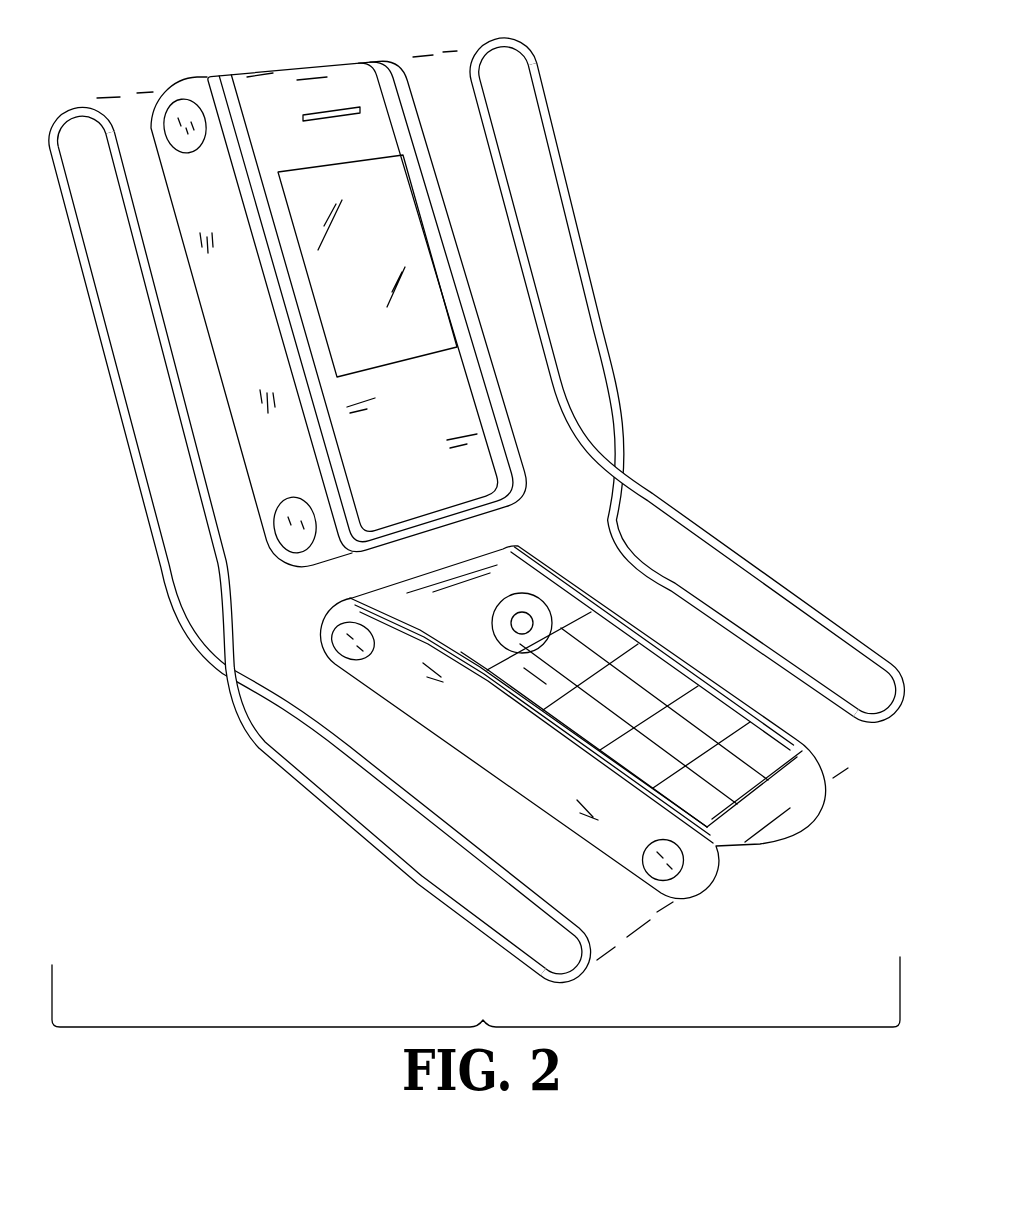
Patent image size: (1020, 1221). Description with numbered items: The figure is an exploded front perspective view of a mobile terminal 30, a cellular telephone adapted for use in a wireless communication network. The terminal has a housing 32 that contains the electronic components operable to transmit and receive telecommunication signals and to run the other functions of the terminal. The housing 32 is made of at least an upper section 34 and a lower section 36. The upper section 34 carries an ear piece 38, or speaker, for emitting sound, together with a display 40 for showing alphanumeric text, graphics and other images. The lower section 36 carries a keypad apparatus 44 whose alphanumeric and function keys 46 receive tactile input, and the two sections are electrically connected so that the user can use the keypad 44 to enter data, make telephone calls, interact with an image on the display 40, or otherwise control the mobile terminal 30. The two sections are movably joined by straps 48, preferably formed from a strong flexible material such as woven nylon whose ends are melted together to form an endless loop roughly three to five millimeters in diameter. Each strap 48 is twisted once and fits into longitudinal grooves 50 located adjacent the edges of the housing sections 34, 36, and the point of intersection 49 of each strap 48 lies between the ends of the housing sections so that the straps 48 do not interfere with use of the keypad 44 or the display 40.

The mobile terminal 30 is at (660, 283).
The housing 32 is at (313, 60).
The upper section 34 is at (270, 85).
The lower section 36 is at (615, 842).
The ear piece 38 is at (340, 118).
The display 40 is at (420, 343).
The keypad apparatus 44 is at (695, 694).
The alphanumeric and function keys 46 is at (622, 630).
The straps 48 is at (476, 510).
The point of intersection 49 is at (222, 672).
The longitudinal grooves 50 is at (413, 125).